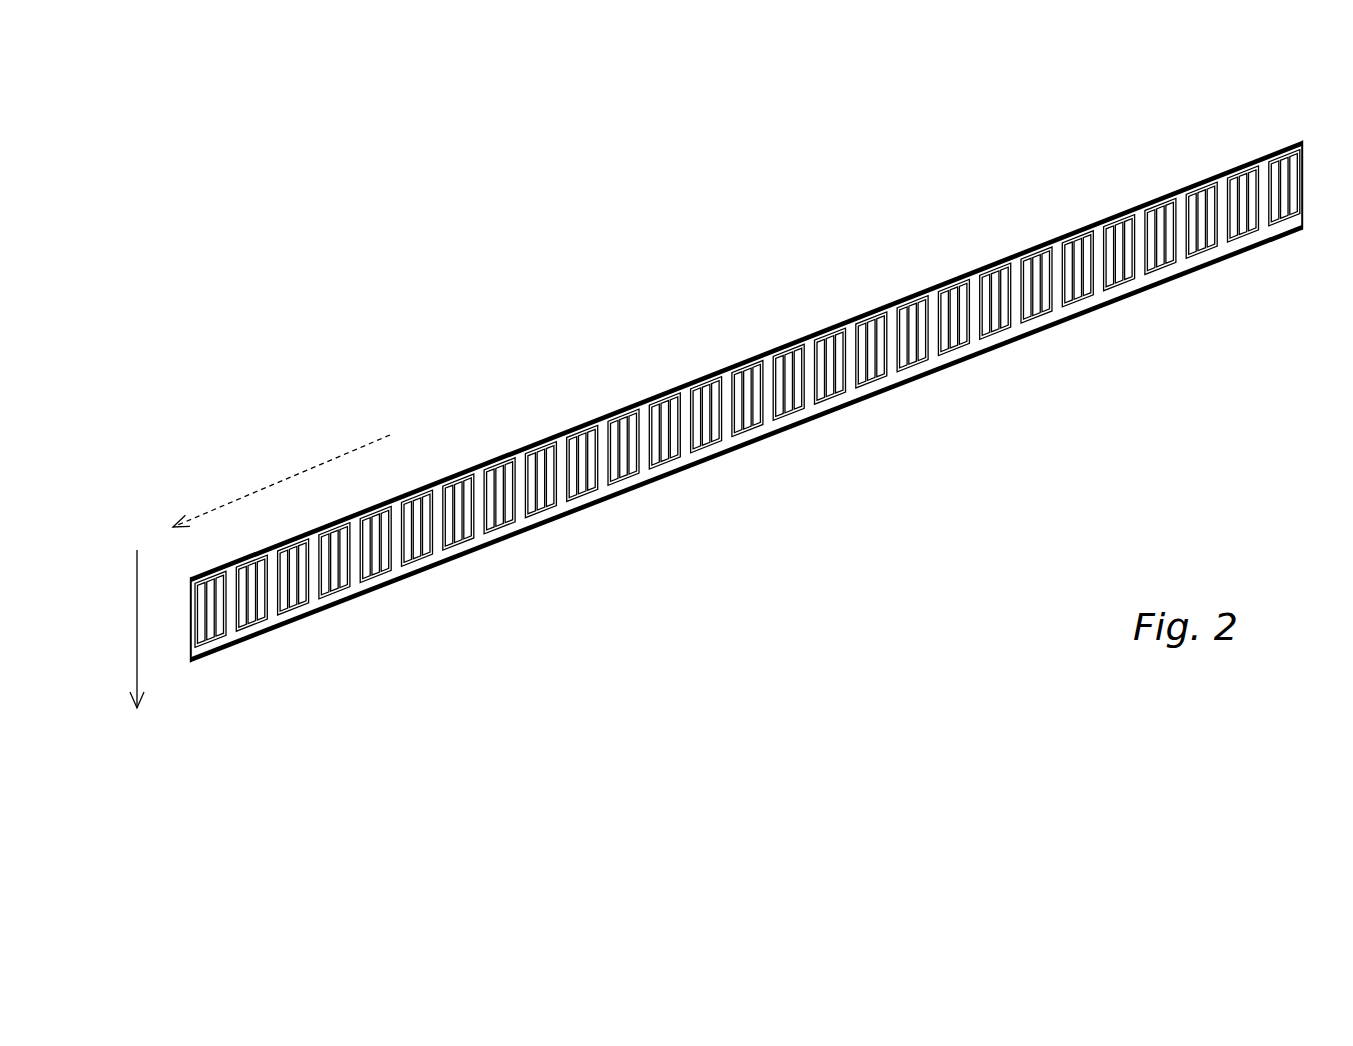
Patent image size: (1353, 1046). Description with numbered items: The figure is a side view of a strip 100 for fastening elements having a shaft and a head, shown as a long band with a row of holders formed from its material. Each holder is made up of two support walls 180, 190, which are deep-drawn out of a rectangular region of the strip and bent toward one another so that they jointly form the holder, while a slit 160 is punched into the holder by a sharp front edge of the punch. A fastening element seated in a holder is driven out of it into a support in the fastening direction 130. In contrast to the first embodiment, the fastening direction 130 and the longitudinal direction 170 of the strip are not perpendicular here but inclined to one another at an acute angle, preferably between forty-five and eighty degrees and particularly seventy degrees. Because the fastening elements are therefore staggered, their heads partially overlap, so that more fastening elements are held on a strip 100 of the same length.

The strip 100 is at (430, 242).
The fastening direction 130 is at (138, 657).
The slit 160 is at (502, 468).
The longitudinal direction of the strip 170 is at (278, 480).
The support wall 180 is at (483, 487).
The support wall 190 is at (510, 482).